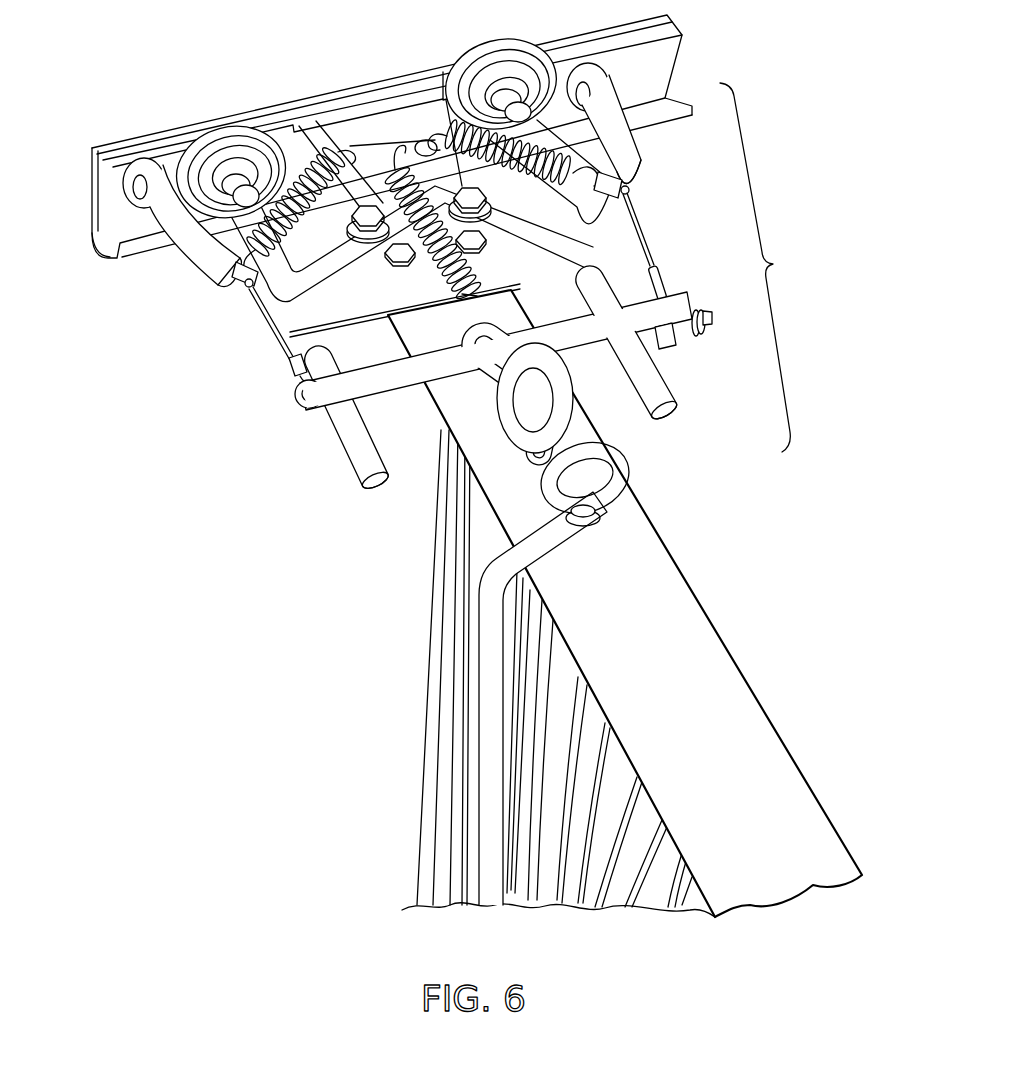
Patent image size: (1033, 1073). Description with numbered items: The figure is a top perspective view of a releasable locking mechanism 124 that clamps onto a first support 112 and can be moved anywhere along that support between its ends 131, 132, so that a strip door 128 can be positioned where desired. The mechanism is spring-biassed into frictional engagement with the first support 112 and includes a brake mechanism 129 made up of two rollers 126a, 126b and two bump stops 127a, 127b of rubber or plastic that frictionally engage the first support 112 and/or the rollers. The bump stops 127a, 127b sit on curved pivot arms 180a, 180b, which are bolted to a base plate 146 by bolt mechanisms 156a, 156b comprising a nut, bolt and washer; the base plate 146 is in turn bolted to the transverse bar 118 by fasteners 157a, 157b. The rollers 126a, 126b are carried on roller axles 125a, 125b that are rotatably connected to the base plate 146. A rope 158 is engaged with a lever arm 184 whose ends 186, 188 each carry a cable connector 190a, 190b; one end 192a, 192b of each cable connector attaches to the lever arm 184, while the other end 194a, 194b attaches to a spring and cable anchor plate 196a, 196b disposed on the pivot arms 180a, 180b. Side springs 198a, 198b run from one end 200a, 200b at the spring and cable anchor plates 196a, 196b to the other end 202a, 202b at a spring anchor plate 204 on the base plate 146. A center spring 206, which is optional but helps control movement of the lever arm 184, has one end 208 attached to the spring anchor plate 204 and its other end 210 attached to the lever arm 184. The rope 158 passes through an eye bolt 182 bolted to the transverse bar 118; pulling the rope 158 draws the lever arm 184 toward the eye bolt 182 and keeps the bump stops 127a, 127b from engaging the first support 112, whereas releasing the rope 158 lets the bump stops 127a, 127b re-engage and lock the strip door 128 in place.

The first support 112 is at (388, 88).
The transverse bar 118 is at (806, 791).
The releasable locking mechanism 124 is at (169, 446).
The roller axle 125a is at (358, 473).
The roller axle 125b is at (666, 390).
The roller 126a is at (207, 137).
The roller 126b is at (492, 77).
The bump stop 127a is at (138, 163).
The bump stop 127b is at (590, 63).
The strip door 128 is at (443, 820).
The brake mechanism 129 is at (768, 267).
The end 131 is at (92, 252).
The end 132 is at (676, 24).
The base plate 146 is at (343, 308).
The bolt mechanism 156a is at (334, 140).
The bolt mechanism 156b is at (470, 186).
The fastener 157a is at (391, 268).
The fastener 157b is at (480, 251).
The rope 158 is at (488, 696).
The curved pivot arm 180a is at (195, 274).
The curved pivot arm 180b is at (630, 150).
The eye bolt 182 is at (624, 466).
The lever arm 184 is at (407, 378).
The end 186 is at (312, 409).
The end 188 is at (701, 334).
The cable connector 190a is at (277, 340).
The cable connector 190b is at (643, 250).
The end of cable connector 192a is at (290, 369).
The end of cable connector 192b is at (661, 283).
The end of cable connector 194a is at (246, 306).
The end of cable connector 194b is at (628, 192).
The spring and cable anchor plate 196a is at (250, 288).
The spring and cable anchor plate 196b is at (630, 177).
The side spring 198a is at (236, 183).
The side spring 198b is at (528, 112).
The end of side spring 200a is at (228, 260).
The end of side spring 200b is at (606, 150).
The end of side spring 202a is at (298, 155).
The end of side spring 202b is at (453, 110).
The spring anchor plate 204 is at (372, 200).
The center spring 206 is at (432, 258).
The end of center spring 208 is at (373, 210).
The end of center spring 210 is at (500, 312).